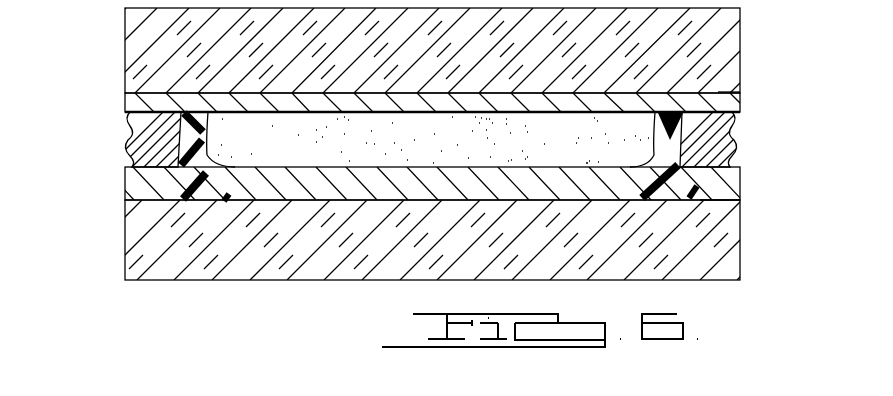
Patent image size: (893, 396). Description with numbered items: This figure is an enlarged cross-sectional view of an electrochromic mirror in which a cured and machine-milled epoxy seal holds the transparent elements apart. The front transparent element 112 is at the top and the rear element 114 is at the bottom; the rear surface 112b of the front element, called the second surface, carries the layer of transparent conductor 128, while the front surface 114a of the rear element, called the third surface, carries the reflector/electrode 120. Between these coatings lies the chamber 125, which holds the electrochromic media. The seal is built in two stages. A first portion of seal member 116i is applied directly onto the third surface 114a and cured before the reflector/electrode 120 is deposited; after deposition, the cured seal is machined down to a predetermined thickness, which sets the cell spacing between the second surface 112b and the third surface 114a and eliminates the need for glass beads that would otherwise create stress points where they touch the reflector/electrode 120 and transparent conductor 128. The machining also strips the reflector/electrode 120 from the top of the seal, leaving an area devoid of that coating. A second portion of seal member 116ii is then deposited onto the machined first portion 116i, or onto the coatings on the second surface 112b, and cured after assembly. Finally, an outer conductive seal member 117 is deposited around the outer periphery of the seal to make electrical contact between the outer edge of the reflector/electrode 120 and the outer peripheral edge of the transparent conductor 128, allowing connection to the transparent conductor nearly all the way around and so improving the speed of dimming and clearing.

The front transparent element 112 is at (140, 32).
The rear surface of the front transparent element 112b is at (718, 92).
The layer of transparent conductor 128 is at (733, 100).
The outer conductive seal member 117 is at (135, 137).
The chamber 125 is at (442, 156).
The first portion of seal member 116i is at (205, 168).
The second portion of seal member 116ii is at (205, 127).
The reflector/electrode 120 is at (740, 185).
The rear element 114 is at (138, 254).
The front surface of the rear element 114a is at (710, 193).